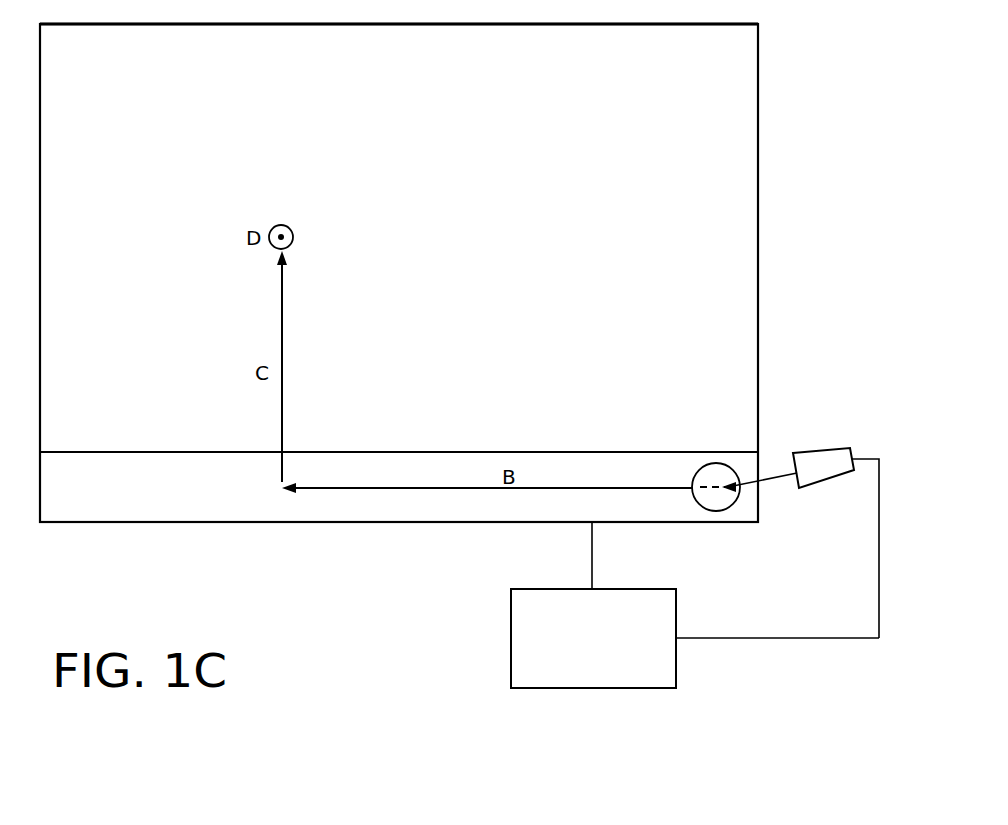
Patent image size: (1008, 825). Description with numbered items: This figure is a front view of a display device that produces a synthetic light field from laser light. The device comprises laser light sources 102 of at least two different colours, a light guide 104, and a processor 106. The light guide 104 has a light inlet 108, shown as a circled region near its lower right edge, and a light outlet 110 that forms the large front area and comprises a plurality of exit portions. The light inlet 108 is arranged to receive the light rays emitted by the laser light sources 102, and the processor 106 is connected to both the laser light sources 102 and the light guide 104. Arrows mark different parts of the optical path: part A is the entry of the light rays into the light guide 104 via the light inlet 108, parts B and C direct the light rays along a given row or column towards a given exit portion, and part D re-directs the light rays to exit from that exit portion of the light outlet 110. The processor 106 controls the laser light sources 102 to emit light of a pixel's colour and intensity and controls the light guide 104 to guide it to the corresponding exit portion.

The laser light sources 102 is at (800, 504).
The light guide 104 is at (399, 525).
The processor 106 is at (695, 605).
The light inlet 108 is at (749, 532).
The light outlet 110 is at (464, 261).